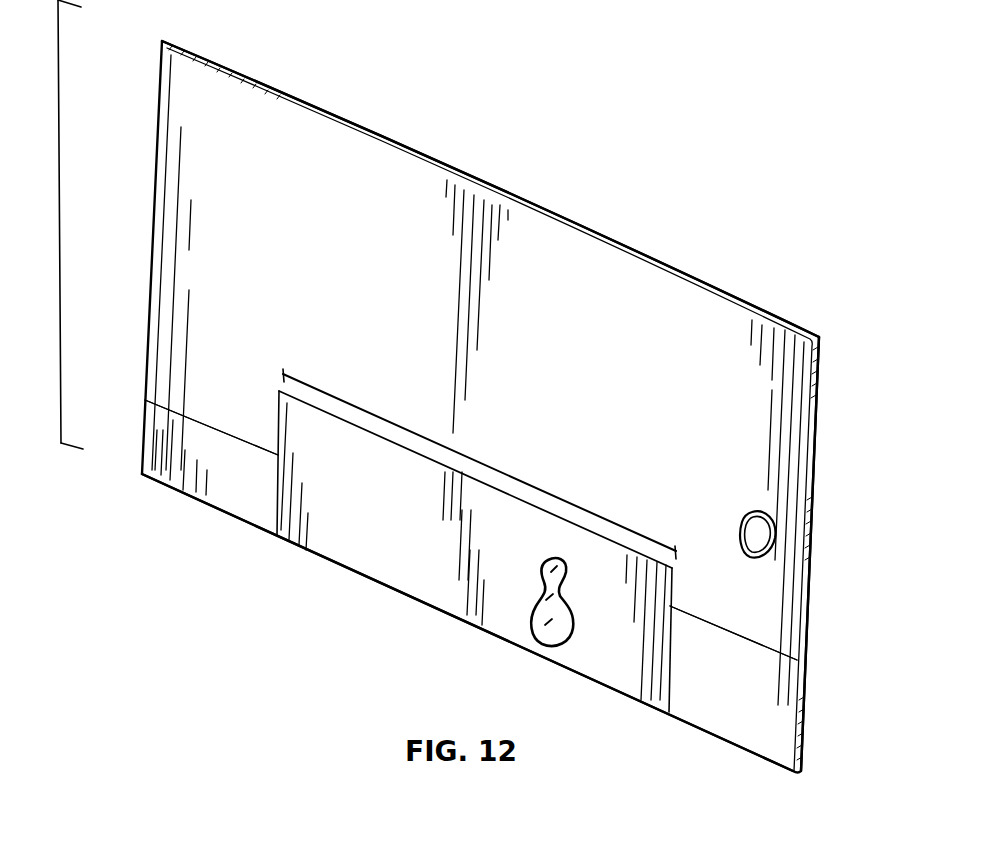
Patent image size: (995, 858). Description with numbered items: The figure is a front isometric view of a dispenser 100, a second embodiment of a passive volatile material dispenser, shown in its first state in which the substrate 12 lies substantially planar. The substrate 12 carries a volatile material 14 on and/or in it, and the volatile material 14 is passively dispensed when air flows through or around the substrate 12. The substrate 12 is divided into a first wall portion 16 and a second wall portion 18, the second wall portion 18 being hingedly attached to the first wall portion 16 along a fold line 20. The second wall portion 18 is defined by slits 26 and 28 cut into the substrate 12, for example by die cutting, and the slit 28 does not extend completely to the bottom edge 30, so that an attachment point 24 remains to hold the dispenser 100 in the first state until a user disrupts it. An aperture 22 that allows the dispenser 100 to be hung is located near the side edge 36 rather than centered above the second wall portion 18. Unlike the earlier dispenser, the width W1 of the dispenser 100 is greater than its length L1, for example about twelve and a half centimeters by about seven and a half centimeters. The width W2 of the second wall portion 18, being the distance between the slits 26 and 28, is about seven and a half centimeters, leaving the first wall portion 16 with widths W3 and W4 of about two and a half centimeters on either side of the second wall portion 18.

The dispenser 100 is at (677, 181).
The substrate 12 is at (822, 352).
The volatile material 14 is at (553, 640).
The first wall portion 16 is at (165, 283).
The second wall portion 18 is at (307, 533).
The fold line 20 is at (280, 390).
The aperture 22 is at (768, 534).
The attachment point 24 is at (664, 710).
The slit 26 is at (277, 461).
The slit 28 is at (677, 665).
The bottom edge 30 is at (156, 176).
The side edge 36 is at (810, 505).
The width W1 is at (160, 15).
The width W2 is at (503, 473).
The width W3 is at (198, 420).
The width W4 is at (763, 648).
The length L1 is at (48, 224).